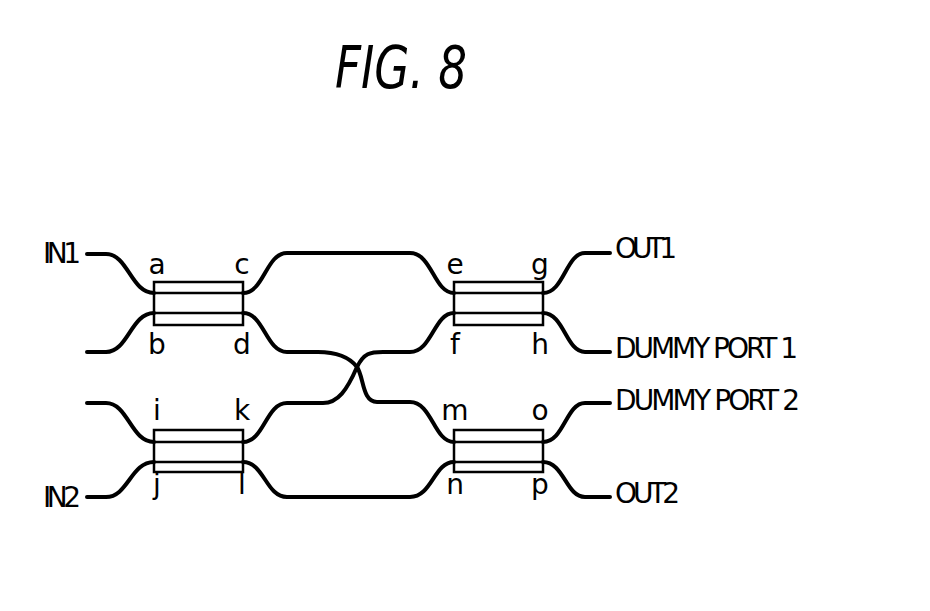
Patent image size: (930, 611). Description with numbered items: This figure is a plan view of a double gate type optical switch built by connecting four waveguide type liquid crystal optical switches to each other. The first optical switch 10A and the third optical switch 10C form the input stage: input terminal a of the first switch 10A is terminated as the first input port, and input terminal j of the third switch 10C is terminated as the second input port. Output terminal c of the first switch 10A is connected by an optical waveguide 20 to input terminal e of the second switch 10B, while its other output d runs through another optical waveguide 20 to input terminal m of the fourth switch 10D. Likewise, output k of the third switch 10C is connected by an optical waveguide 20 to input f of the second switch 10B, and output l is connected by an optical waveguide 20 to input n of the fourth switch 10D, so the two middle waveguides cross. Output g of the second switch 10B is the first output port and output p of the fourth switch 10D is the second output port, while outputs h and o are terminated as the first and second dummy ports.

The first waveguide type liquid crystal optical switch 10A is at (189, 300).
The second waveguide type liquid crystal optical switch 10B is at (489, 300).
The third waveguide type liquid crystal optical switch 10C is at (189, 453).
The fourth waveguide type liquid crystal optical switch 10D is at (489, 453).
The optical waveguide 20 is at (338, 250).